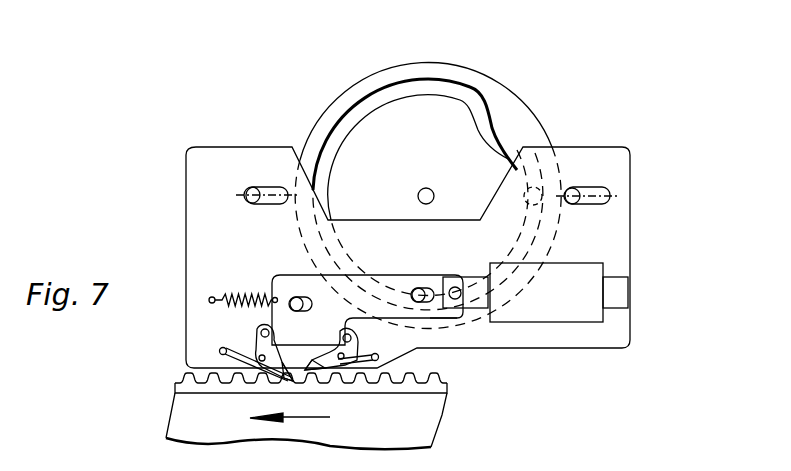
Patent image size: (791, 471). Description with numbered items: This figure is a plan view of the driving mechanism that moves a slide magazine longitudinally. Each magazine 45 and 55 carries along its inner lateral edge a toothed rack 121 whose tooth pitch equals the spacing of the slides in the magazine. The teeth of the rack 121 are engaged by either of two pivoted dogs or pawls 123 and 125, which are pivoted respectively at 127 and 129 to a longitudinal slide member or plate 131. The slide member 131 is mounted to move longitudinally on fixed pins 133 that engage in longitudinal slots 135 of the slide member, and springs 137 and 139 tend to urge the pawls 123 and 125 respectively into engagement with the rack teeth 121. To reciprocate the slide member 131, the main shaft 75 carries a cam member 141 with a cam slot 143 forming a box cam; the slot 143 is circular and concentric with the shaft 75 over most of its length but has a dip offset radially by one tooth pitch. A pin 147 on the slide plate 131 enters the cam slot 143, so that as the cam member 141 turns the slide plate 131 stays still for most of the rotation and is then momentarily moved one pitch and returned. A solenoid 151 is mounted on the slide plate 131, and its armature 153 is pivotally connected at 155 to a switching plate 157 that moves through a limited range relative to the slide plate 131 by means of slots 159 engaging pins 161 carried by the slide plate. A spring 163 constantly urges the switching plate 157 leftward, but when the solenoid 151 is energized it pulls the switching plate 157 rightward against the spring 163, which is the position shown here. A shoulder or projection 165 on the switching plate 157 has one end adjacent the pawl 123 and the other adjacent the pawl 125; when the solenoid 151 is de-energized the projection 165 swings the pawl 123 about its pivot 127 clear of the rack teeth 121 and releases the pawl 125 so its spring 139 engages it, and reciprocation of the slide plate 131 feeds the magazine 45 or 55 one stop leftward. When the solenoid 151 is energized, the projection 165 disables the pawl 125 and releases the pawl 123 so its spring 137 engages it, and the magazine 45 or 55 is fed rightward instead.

The magazine 45 is at (438, 416).
The magazine 55 is at (435, 437).
The main shaft 75 is at (417, 195).
The toothed rack 121 is at (432, 378).
The pawl 123 is at (259, 336).
The pawl 125 is at (352, 352).
The pivot 127 is at (262, 374).
The pivot 129 is at (328, 372).
The slide member 131 is at (630, 233).
The fixed pins 133 is at (246, 190).
The longitudinal slots 135 is at (268, 187).
The spring 137 is at (223, 355).
The spring 139 is at (372, 361).
The cam member 141 is at (508, 100).
The cam slot 143 is at (439, 80).
The pin 147 is at (538, 202).
The solenoid 151 is at (571, 264).
The armature 153 is at (476, 277).
The pivotal connection 155 is at (455, 287).
The switching plate 157 is at (435, 320).
The slots 159 is at (303, 296).
The pins 161 is at (290, 300).
The spring 163 is at (253, 296).
The projection 165 is at (297, 345).